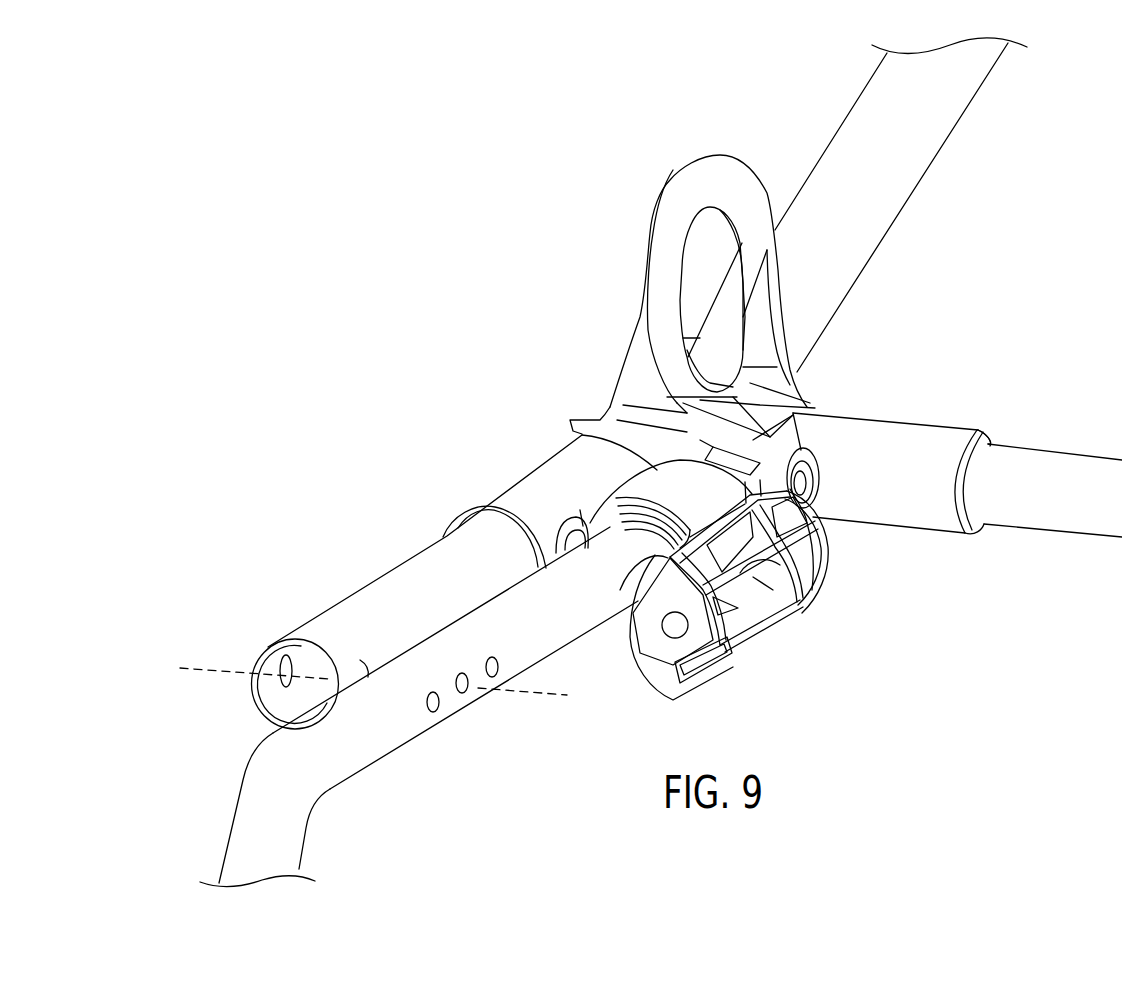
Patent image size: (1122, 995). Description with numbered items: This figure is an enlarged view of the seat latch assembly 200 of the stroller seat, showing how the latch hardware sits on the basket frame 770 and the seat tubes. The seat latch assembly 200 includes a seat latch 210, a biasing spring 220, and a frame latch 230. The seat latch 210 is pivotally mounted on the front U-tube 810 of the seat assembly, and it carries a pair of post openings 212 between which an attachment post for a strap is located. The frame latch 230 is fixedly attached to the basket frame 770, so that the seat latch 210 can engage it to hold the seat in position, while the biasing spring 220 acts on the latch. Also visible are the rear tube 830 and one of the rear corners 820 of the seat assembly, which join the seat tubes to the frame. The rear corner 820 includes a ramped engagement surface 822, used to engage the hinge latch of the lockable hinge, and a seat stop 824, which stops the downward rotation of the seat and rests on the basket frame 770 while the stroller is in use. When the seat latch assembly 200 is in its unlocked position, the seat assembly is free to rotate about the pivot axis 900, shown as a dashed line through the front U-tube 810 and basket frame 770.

The seat latch assembly 200 is at (390, 289).
The seat latch 210 is at (780, 614).
The post openings 212 is at (785, 597).
The biasing spring 220 is at (632, 605).
The frame latch 230 is at (488, 493).
The basket frame 770 is at (335, 605).
The front U-tube 810 is at (417, 740).
The rear corners 820 is at (688, 168).
The ramped engagement surface 822 is at (595, 410).
The seat stop 824 is at (570, 420).
The rear tube 830 is at (1058, 445).
The pivot axis 900 is at (208, 668).